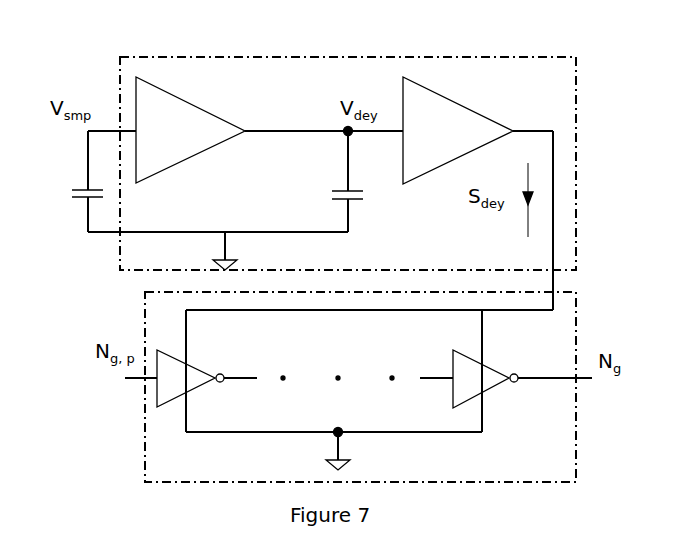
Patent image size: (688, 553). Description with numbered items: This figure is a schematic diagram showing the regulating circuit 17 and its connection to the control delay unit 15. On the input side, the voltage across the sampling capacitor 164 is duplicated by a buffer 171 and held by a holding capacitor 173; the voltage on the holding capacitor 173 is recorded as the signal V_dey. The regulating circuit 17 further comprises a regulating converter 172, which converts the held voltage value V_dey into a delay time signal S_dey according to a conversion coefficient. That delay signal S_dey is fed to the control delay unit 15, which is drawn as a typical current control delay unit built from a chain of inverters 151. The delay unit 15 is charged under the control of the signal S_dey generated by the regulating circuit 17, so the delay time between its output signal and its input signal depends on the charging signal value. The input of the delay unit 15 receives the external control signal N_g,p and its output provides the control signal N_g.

The regulating circuit 17 is at (405, 53).
The buffer 171 is at (200, 110).
The regulating converter 172 is at (470, 107).
The holding capacitor 173 is at (327, 197).
The sampling capacitor 164 is at (80, 180).
The control delay unit 15 is at (577, 332).
The inverter 151 is at (192, 367).